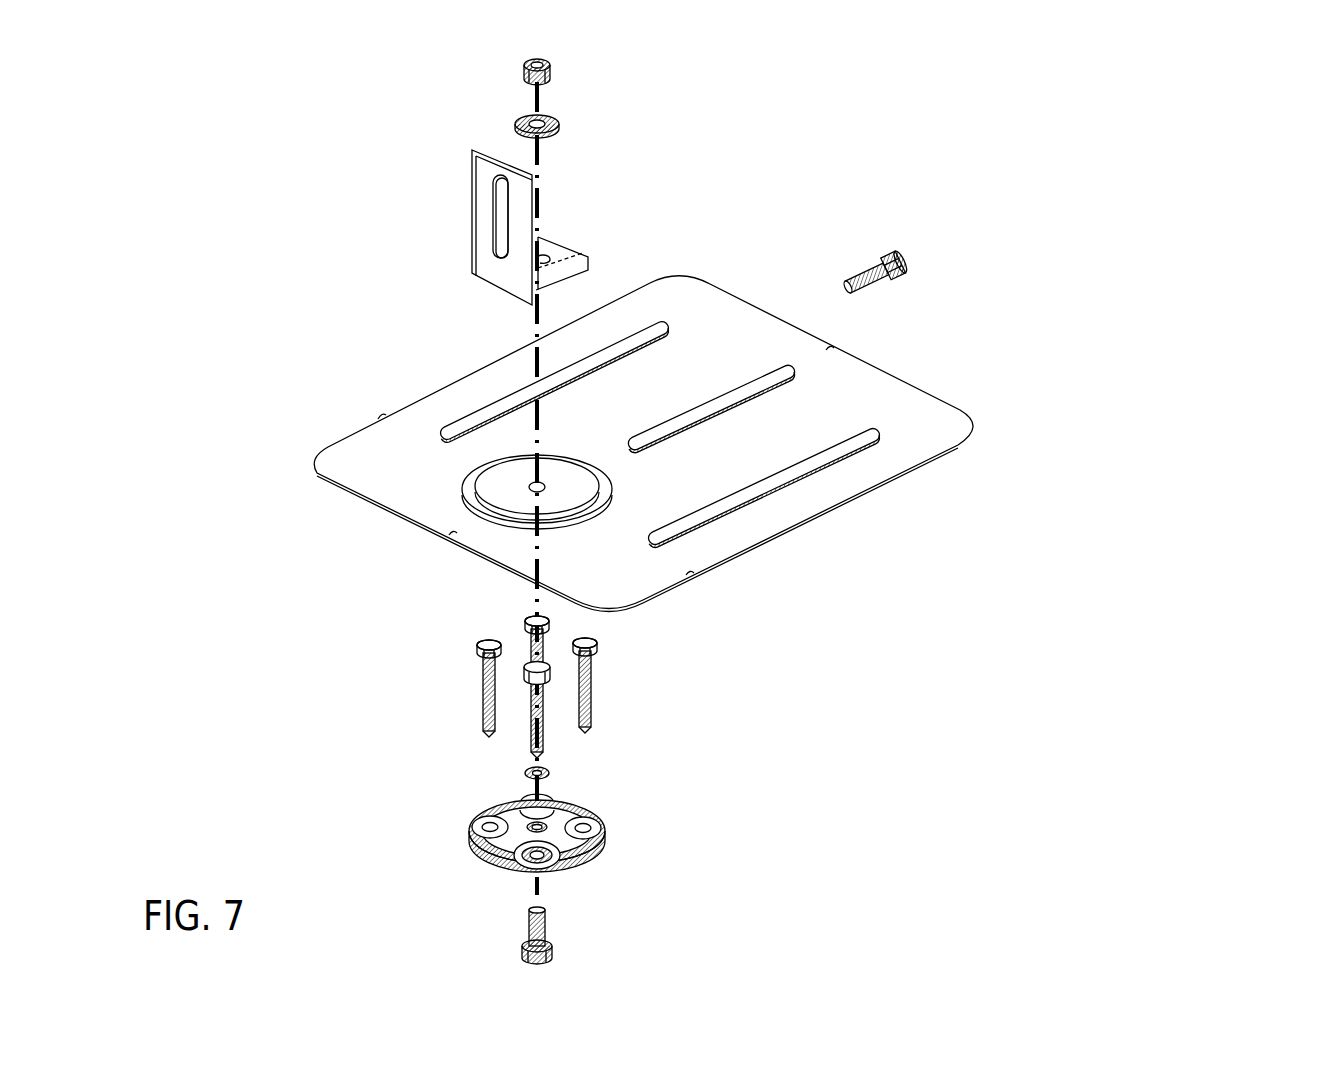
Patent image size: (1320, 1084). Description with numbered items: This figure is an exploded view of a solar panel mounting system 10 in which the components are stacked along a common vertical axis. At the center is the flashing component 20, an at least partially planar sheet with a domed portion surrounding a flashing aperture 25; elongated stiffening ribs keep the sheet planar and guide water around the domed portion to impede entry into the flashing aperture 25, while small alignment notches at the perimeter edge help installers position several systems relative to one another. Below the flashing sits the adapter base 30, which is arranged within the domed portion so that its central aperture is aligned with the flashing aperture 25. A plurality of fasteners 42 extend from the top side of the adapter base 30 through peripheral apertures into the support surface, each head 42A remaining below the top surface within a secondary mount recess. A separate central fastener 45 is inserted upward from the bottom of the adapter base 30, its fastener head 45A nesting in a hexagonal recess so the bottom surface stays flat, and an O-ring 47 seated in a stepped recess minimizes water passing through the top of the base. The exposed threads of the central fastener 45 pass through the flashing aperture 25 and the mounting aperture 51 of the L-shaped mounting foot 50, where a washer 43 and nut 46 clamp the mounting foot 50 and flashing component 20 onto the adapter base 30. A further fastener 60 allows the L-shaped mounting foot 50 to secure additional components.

The mounting system 10 is at (1165, 112).
The flashing component 20 is at (673, 593).
The flashing aperture 25 is at (523, 488).
The adapter base 30 is at (612, 845).
The fasteners 42 is at (596, 700).
The head 42A is at (599, 648).
The washer 43 is at (565, 125).
The central fastener 45 is at (643, 935).
The fastener head 45A is at (550, 945).
The nut 46 is at (560, 74).
The O-ring 47 is at (525, 775).
The L-shaped mounting foot 50 is at (578, 250).
The mounting aperture 51 is at (546, 258).
The fastener 60 is at (905, 256).